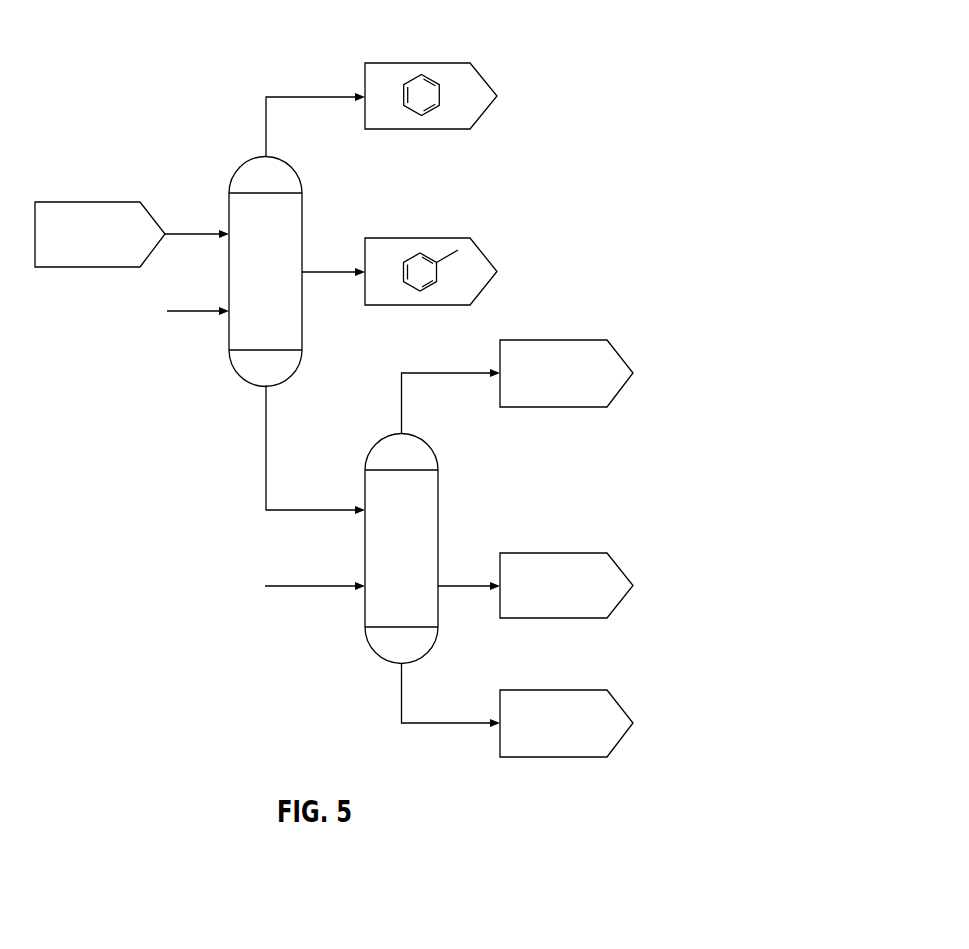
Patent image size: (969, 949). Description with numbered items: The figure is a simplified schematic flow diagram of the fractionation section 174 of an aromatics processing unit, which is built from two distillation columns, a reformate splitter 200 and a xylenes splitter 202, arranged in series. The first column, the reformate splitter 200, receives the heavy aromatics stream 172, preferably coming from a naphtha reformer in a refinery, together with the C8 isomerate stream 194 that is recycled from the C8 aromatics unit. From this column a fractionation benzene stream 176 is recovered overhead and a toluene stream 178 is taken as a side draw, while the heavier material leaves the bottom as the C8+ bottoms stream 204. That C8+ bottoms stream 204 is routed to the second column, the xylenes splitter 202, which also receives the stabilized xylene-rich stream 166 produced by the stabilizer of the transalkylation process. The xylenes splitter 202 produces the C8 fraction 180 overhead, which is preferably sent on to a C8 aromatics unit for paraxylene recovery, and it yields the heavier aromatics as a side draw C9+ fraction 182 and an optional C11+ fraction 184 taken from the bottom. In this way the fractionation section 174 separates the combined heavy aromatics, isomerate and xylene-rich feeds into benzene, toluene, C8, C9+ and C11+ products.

The fractionation section 174 is at (204, 60).
The heavy aromatics stream 172 is at (87, 202).
The fractionation benzene stream 176 is at (418, 63).
The toluene stream 178 is at (418, 238).
The C8 fraction 180 is at (552, 340).
The C9+ fraction 182 is at (468, 588).
The C11+ fraction 184 is at (397, 687).
The C8 isomerate stream 194 is at (197, 313).
The stabilized xylene-rich stream 166 is at (303, 585).
The reformate splitter 200 is at (303, 300).
The xylenes splitter 202 is at (440, 547).
The C8+ bottoms stream 204 is at (266, 462).